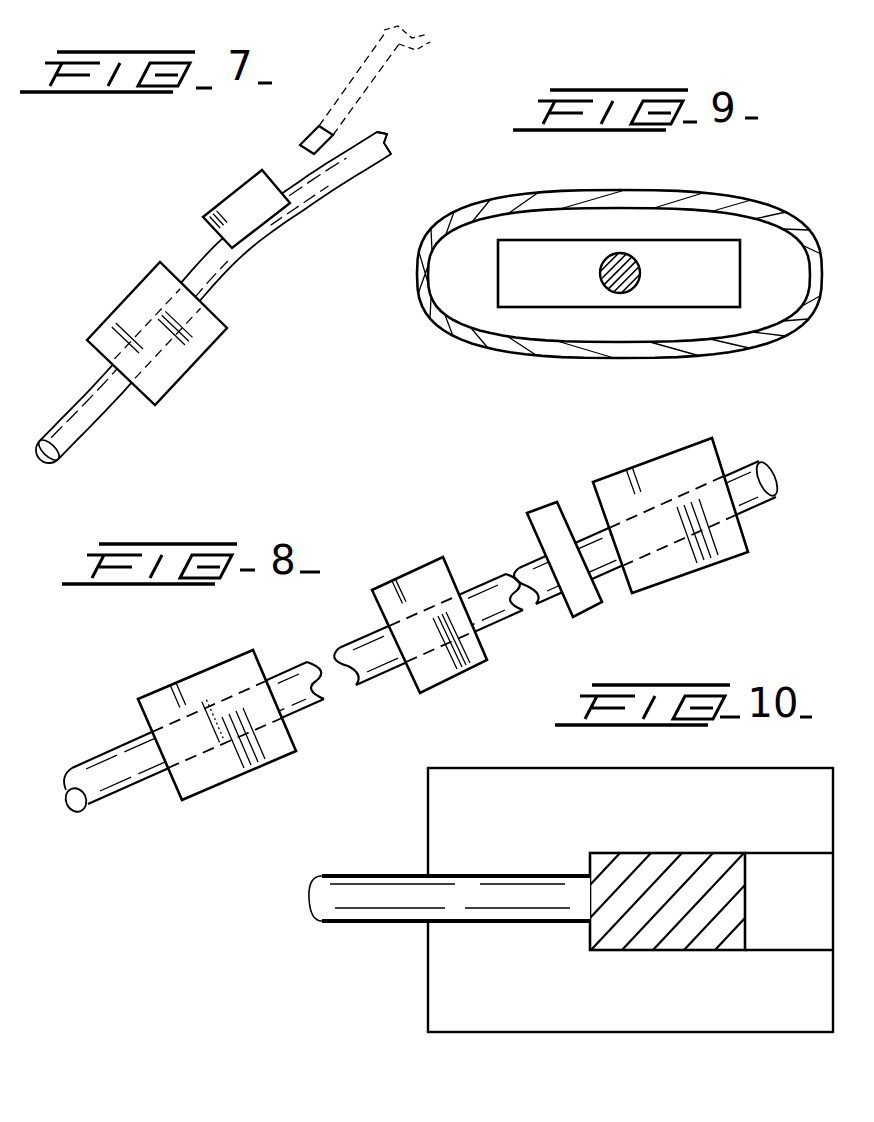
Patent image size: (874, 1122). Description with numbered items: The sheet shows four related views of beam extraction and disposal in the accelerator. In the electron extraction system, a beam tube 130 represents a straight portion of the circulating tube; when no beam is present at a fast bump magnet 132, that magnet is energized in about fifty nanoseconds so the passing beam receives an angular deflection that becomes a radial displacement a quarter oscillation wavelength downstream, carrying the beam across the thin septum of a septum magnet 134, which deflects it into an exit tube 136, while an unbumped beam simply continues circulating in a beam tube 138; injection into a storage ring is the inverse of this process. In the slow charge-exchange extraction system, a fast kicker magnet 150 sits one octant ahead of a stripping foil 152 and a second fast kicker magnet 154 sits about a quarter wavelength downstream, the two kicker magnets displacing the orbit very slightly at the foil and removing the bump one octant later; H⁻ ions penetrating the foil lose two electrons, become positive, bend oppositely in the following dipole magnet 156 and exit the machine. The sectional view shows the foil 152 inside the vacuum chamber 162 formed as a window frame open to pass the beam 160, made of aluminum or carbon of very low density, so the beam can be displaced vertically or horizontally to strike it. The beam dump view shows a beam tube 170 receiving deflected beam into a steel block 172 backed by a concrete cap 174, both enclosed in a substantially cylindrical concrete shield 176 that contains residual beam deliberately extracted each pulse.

In FIG. 7, the beam tube 130 is at (78, 435).
In FIG. 7, the fast bump magnet 132 is at (188, 367).
In FIG. 7, the septum magnet 134 is at (233, 195).
In FIG. 7, the exit tube 136 is at (302, 143).
In FIG. 7, the beam tube 138 is at (360, 162).
In FIG. 8, the fast kicker magnet 150 is at (220, 790).
In FIG. 8, the stripping foil 152 is at (463, 667).
In FIG. 9, the stripping foil 152 is at (770, 310).
In FIG. 8, the second fast kicker magnet 154 is at (713, 568).
In FIG. 8, the dipole magnet 156 is at (583, 617).
In FIG. 9, the beam 160 is at (626, 294).
In FIG. 9, the vacuum chamber 162 is at (780, 216).
In FIG. 10, the beam tube 170 is at (372, 926).
In FIG. 10, the steel block 172 is at (653, 950).
In FIG. 10, the concrete cap 174 is at (760, 950).
In FIG. 10, the concrete shield 176 is at (615, 1033).